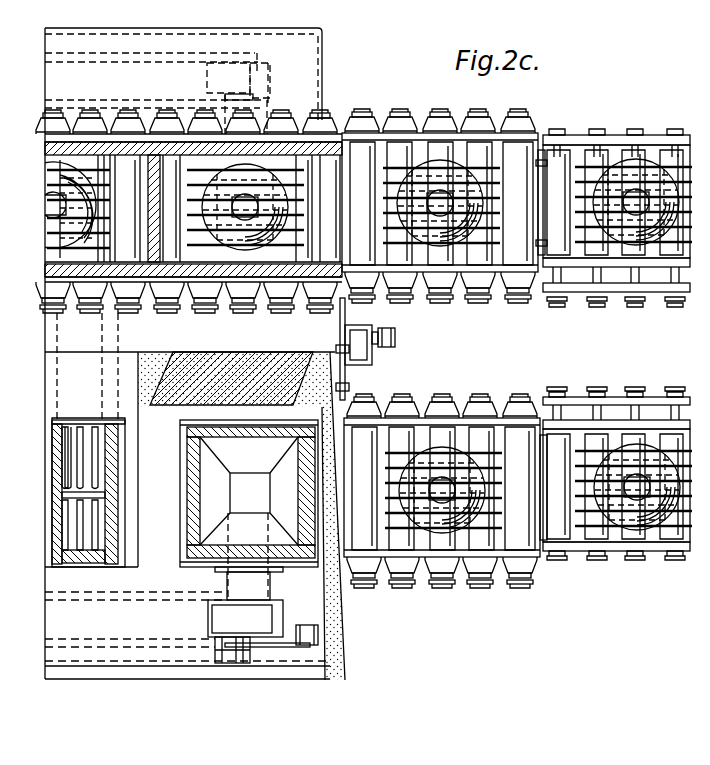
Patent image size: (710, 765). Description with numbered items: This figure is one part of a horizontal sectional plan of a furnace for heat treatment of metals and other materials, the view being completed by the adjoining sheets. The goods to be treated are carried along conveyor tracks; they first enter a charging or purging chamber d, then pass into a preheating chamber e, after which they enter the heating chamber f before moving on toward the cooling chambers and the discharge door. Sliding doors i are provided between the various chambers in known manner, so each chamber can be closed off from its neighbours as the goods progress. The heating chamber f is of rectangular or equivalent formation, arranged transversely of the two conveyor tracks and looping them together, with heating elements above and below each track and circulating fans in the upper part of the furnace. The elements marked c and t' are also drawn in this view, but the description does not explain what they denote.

The heating chamber f is at (108, 165).
The sliding door i is at (150, 208).
The roller c is at (421, 170).
The charging or purging chamber d is at (462, 152).
The connecting rail t' is at (616, 126).
The preheating chamber e is at (226, 284).